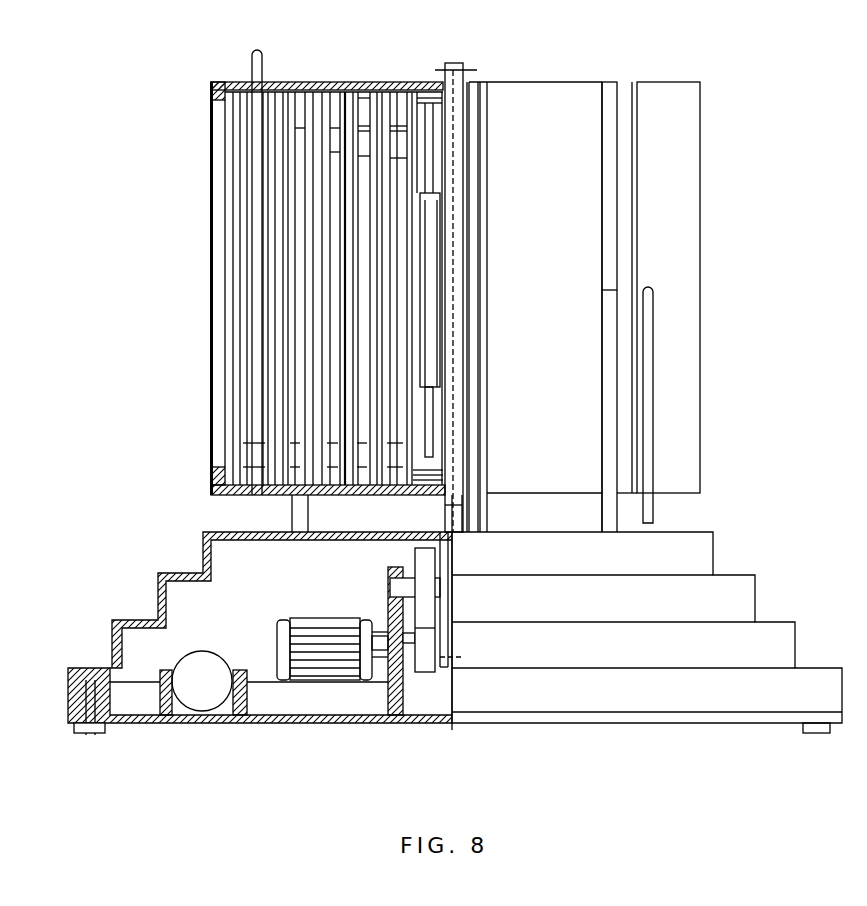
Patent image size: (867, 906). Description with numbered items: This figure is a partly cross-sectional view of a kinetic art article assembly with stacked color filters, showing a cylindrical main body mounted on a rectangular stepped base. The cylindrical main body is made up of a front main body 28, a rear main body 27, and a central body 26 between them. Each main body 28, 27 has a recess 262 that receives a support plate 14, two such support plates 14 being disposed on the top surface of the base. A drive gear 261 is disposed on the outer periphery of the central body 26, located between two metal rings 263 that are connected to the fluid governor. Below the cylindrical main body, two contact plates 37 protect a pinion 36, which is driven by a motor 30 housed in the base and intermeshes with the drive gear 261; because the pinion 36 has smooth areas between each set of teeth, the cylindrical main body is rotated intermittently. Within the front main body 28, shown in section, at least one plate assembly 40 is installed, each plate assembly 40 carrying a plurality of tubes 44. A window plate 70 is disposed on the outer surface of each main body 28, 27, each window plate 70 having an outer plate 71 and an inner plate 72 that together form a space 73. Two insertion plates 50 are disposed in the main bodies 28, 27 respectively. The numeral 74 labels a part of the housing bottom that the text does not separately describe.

The support plate 14 is at (607, 507).
The central body 26 is at (537, 108).
The rear main body 27 is at (663, 95).
The front main body 28 is at (230, 81).
The motor 30 is at (323, 680).
The pinion 36 is at (447, 509).
The contact plate 37 is at (487, 513).
The plate assembly 40 is at (347, 82).
The tube 44 is at (402, 112).
The insertion plate 50 is at (254, 62).
The window plate 70 is at (160, 262).
The outer plate 71 is at (233, 202).
The inner plate 72 is at (247, 282).
The space 73 is at (240, 258).
The bottom plate 74 is at (357, 493).
The drive gear 261 is at (466, 70).
The recess 262 is at (612, 93).
The metal ring 263 is at (488, 83).